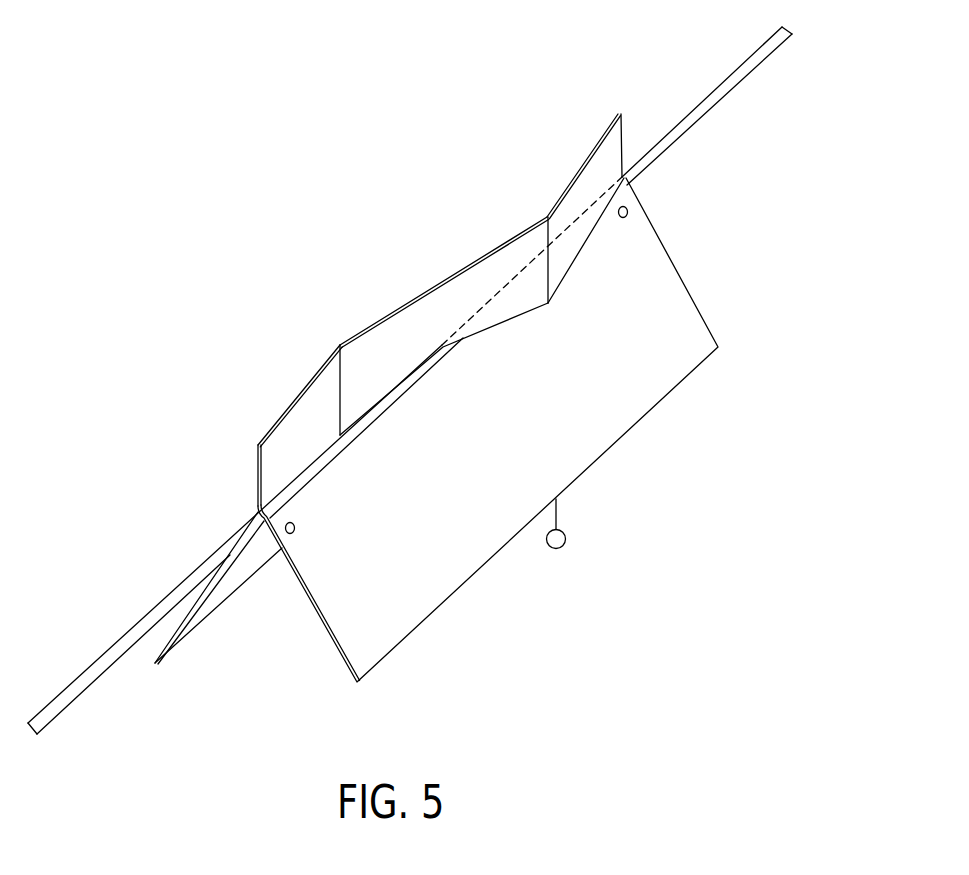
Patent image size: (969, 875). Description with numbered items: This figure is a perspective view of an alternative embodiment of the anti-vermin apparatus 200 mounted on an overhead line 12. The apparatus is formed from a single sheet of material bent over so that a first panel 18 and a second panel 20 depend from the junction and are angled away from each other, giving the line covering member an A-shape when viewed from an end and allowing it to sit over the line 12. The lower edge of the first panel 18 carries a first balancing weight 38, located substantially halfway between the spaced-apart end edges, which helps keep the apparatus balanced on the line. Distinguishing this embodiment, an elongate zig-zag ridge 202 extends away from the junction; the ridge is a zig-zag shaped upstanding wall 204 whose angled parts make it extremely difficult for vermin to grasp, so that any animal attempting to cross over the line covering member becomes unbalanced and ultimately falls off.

The overhead line 12 is at (410, 380).
The first panel 18 is at (488, 430).
The second panel 20 is at (218, 588).
The first balancing weight 38 is at (589, 565).
The anti-vermin apparatus 200 is at (441, 310).
The elongate zig-zag ridge 202 is at (444, 279).
The zig-zag shaped upstanding wall 204 is at (300, 421).